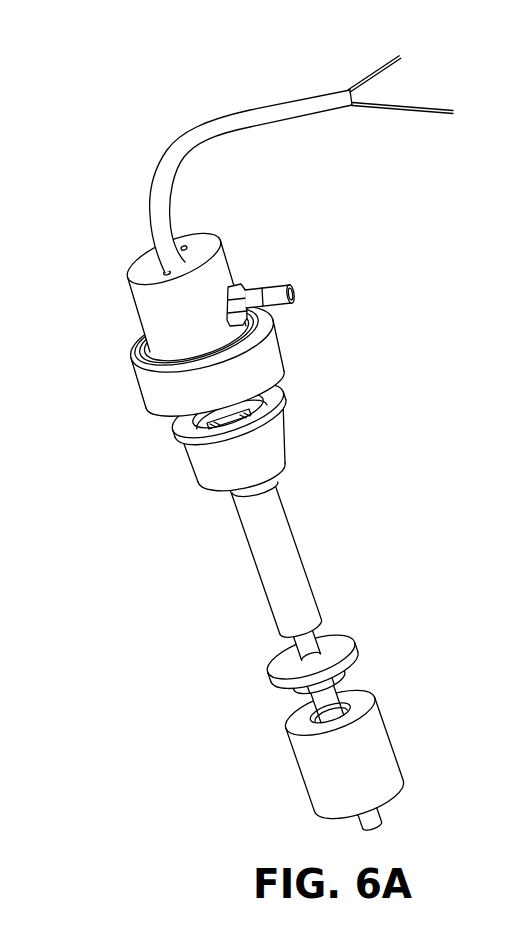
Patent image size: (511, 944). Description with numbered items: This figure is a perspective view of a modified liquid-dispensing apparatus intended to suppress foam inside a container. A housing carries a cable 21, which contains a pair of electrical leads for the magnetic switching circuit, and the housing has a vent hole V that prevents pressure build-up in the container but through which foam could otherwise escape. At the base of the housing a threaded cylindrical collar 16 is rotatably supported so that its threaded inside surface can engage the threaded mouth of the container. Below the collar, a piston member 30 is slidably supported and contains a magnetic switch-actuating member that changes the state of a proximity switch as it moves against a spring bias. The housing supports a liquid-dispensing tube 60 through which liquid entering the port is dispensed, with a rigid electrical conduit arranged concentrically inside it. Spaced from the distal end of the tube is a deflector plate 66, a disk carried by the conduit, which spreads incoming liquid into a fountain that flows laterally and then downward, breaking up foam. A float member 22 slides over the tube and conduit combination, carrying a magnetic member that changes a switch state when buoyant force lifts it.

The cable 21 is at (251, 111).
The vent hole V is at (186, 246).
The threaded cylindrical collar 16 is at (275, 352).
The piston member 30 is at (278, 440).
The liquid-dispensing tube 60 is at (293, 555).
The deflector plate 66 is at (343, 645).
The float member 22 is at (382, 742).